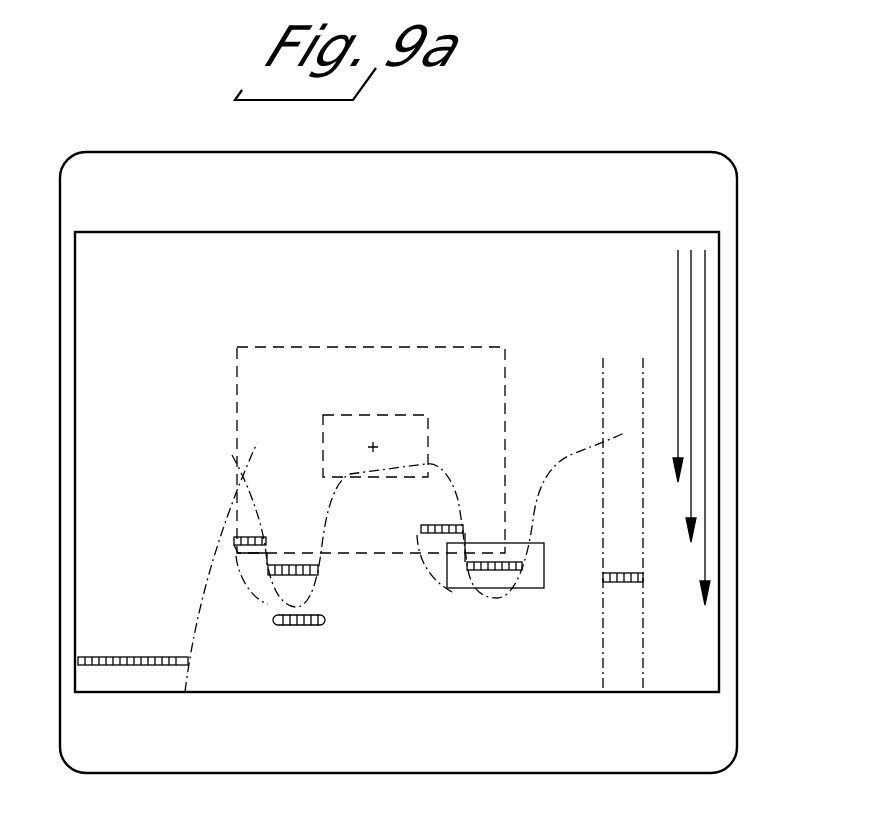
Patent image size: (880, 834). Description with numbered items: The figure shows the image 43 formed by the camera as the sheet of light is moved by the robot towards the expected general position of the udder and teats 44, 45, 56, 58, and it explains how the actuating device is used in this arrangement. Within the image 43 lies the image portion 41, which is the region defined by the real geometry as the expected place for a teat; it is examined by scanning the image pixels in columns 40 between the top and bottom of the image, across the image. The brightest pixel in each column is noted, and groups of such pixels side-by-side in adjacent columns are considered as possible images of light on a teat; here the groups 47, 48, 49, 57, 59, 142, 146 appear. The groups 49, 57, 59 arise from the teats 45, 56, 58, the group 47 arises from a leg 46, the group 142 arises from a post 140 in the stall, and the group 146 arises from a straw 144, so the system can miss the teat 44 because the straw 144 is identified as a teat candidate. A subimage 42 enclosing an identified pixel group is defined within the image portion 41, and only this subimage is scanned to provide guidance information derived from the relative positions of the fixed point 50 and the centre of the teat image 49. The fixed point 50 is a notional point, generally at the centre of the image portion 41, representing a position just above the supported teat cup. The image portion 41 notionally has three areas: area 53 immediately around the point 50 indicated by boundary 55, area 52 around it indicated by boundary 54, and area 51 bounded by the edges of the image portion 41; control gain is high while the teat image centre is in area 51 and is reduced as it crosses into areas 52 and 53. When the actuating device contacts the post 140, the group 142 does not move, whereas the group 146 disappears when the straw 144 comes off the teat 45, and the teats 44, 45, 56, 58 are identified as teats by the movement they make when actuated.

The columns of image pixels 40 is at (678, 327).
The image portion 41 is at (618, 231).
The subimage 42 is at (546, 552).
The image 43 is at (621, 151).
The teat 44 is at (500, 596).
The teat 45 is at (312, 596).
The leg 46 is at (202, 607).
The group of brightest pixels 47 is at (137, 655).
The group of brightest pixels 48 is at (297, 565).
The group of brightest pixels (teat image) 49 is at (488, 562).
The fixed point 50 is at (372, 446).
The area 51 is at (586, 297).
The area 52 is at (470, 389).
The area 53 is at (422, 447).
The boundary 54 is at (507, 433).
The boundary 55 is at (431, 443).
The teat 56 is at (268, 592).
The group of brightest pixels 57 is at (240, 537).
The teat 58 is at (432, 583).
The group of brightest pixels 59 is at (422, 525).
The post 140 is at (644, 627).
The group of brightest pixels 142 is at (622, 583).
The straw 144 is at (318, 626).
The group of brightest pixels 146 is at (298, 626).